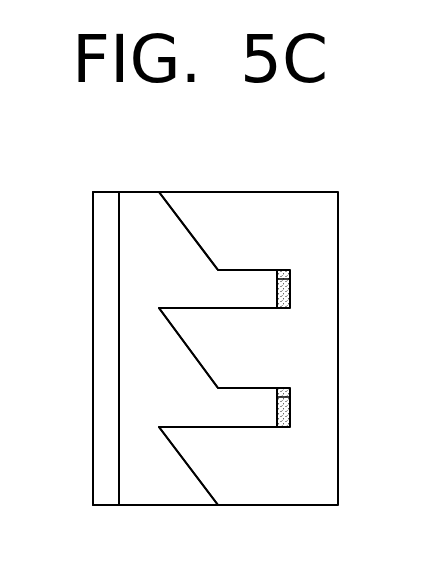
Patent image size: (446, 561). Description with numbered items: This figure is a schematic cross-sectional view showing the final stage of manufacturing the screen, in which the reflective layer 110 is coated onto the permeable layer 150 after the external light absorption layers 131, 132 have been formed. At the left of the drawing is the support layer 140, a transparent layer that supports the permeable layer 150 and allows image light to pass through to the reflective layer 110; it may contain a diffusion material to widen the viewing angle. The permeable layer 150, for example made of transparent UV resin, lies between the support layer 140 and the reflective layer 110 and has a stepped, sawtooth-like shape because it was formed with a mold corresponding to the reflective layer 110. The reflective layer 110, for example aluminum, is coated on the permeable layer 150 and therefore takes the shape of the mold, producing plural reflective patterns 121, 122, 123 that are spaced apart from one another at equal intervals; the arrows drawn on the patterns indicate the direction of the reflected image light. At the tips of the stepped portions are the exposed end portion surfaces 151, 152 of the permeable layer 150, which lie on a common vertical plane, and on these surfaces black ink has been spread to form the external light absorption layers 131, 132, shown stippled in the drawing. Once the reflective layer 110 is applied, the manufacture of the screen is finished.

The reflective layer 110 is at (322, 330).
The support layer 140 is at (98, 298).
The permeable layer 150 is at (152, 387).
The reflective pattern 121 is at (216, 227).
The reflective pattern 122 is at (216, 340).
The reflective pattern 123 is at (216, 457).
The end portion surface 151 is at (290, 280).
The external light absorption layer 131 is at (284, 296).
The end portion surface 152 is at (290, 398).
The external light absorption layer 132 is at (284, 412).